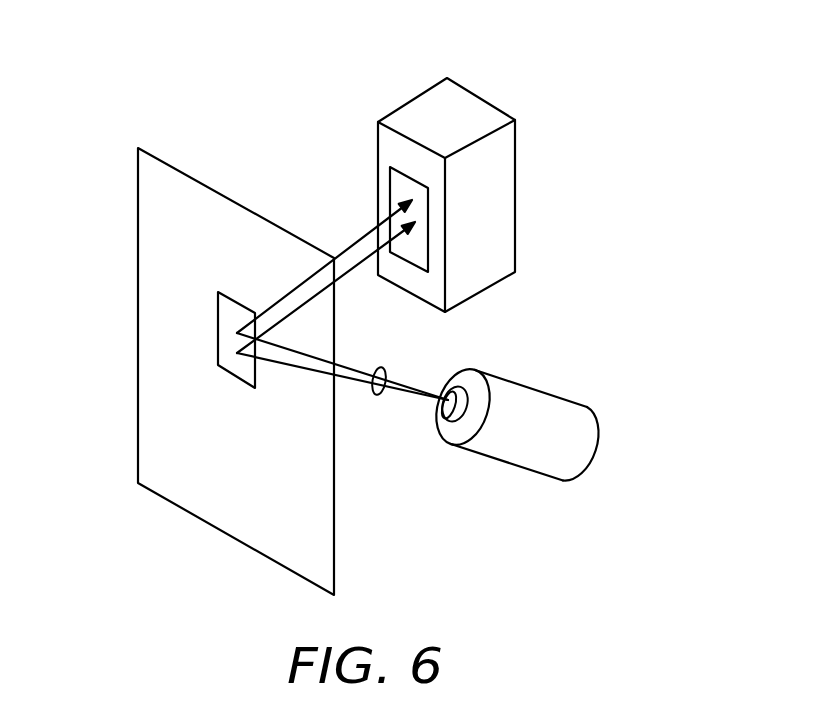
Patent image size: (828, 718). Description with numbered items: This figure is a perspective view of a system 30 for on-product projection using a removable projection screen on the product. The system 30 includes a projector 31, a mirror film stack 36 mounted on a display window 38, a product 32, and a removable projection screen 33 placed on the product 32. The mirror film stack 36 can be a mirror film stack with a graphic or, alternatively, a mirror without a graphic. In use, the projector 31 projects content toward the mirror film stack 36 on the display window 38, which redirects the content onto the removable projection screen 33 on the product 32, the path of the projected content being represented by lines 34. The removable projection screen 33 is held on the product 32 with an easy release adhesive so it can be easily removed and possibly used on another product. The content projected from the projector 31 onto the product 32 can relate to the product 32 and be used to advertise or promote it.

The system 30 is at (659, 238).
The projector 31 is at (558, 395).
The product 32 is at (498, 162).
The removable projection screen 33 is at (398, 182).
The lines 34 is at (376, 396).
The mirror film stack 36 is at (228, 313).
The display window 38 is at (158, 453).